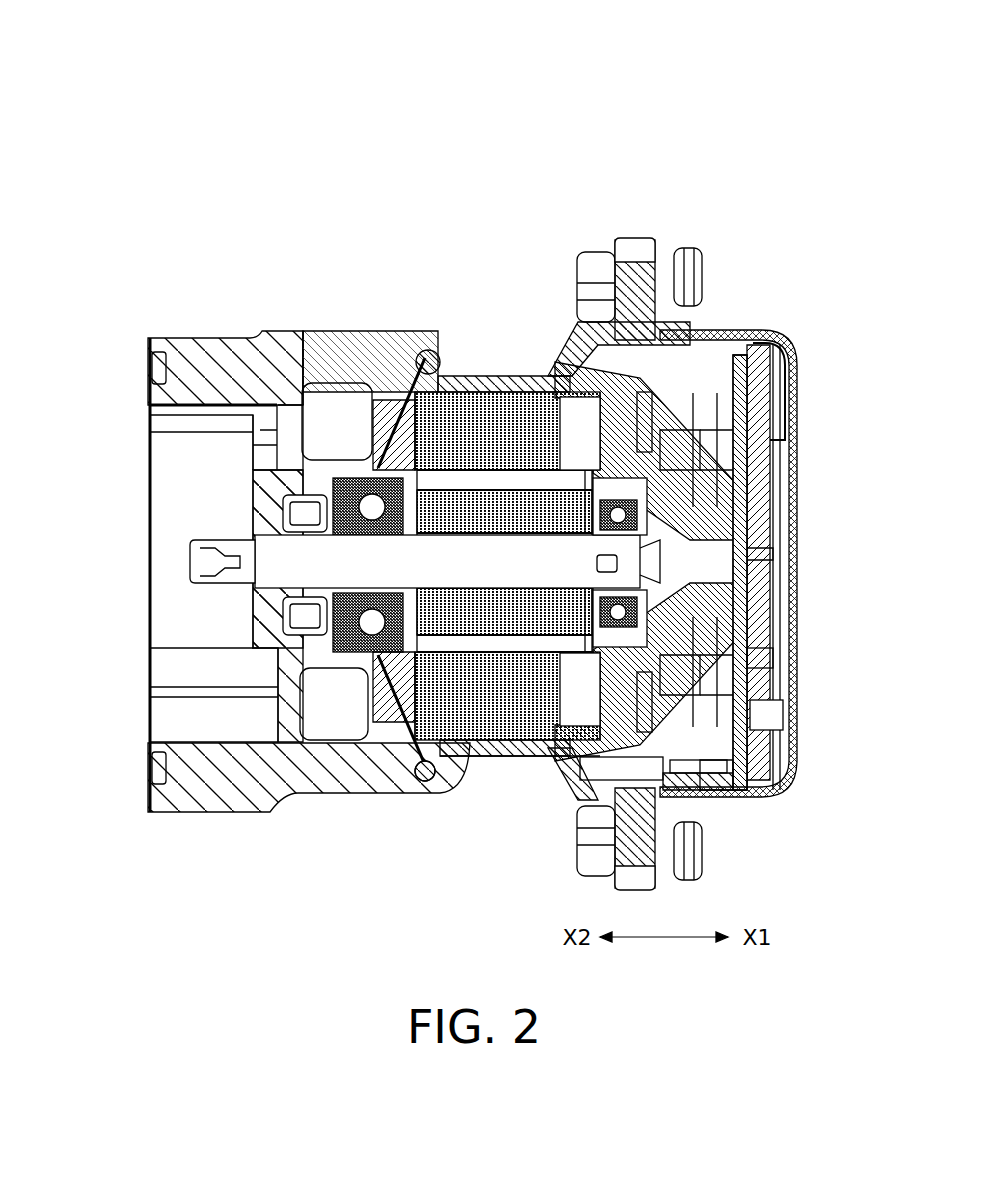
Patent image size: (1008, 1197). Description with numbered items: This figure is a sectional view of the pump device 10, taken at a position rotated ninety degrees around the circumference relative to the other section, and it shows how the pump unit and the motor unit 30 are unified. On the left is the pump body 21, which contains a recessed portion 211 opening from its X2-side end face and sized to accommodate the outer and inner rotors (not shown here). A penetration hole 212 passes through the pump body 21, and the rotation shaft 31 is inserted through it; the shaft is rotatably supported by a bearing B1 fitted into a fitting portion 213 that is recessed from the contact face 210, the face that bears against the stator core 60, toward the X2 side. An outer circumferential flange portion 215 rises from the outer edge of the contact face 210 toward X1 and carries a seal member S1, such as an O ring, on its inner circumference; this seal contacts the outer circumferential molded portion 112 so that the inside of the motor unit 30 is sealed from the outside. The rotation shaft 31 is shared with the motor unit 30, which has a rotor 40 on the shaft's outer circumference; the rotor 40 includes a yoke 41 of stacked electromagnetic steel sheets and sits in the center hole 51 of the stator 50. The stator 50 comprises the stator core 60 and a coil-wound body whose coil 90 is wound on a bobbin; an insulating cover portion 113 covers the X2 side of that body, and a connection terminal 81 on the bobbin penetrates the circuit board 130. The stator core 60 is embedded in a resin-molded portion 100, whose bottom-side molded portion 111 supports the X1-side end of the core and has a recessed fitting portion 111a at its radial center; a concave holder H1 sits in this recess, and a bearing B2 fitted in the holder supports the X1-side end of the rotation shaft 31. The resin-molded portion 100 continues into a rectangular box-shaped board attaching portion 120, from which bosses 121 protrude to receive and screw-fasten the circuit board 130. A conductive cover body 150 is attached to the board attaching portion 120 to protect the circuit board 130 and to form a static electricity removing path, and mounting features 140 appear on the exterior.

The pump device 10 is at (476, 152).
The pump body 21 is at (220, 812).
The recessed portion 211 is at (175, 445).
The penetration hole 212 is at (198, 550).
The fitting portion 213 is at (300, 336).
The outer circumferential flange portion 215 is at (428, 350).
The contact face 210 is at (440, 342).
The stator 50 is at (518, 374).
The center hole 51 is at (455, 468).
The stator core 60 is at (488, 392).
The mounting portion 140 is at (543, 338).
The resin-molded portion 100 is at (748, 606).
The bottom-side molded portion 111 is at (770, 445).
The recessed fitting portion 111a is at (775, 553).
The boss 121 is at (782, 520).
The board attaching portion 120 is at (792, 738).
The circuit board 130 is at (786, 708).
The cover body 150 is at (788, 420).
The holder H1 is at (790, 657).
The connection terminal 81 is at (735, 772).
The bearing B1 is at (352, 655).
The bearing B2 is at (700, 493).
The insulating cover portion 113 is at (365, 700).
The coil 90 is at (398, 690).
The seal member S1 is at (427, 782).
The yoke 41 is at (452, 756).
The outer circumferential molded portion 112 is at (475, 758).
The motor unit 30 is at (506, 756).
The rotor 40 is at (536, 760).
The rotation shaft 31 is at (205, 578).